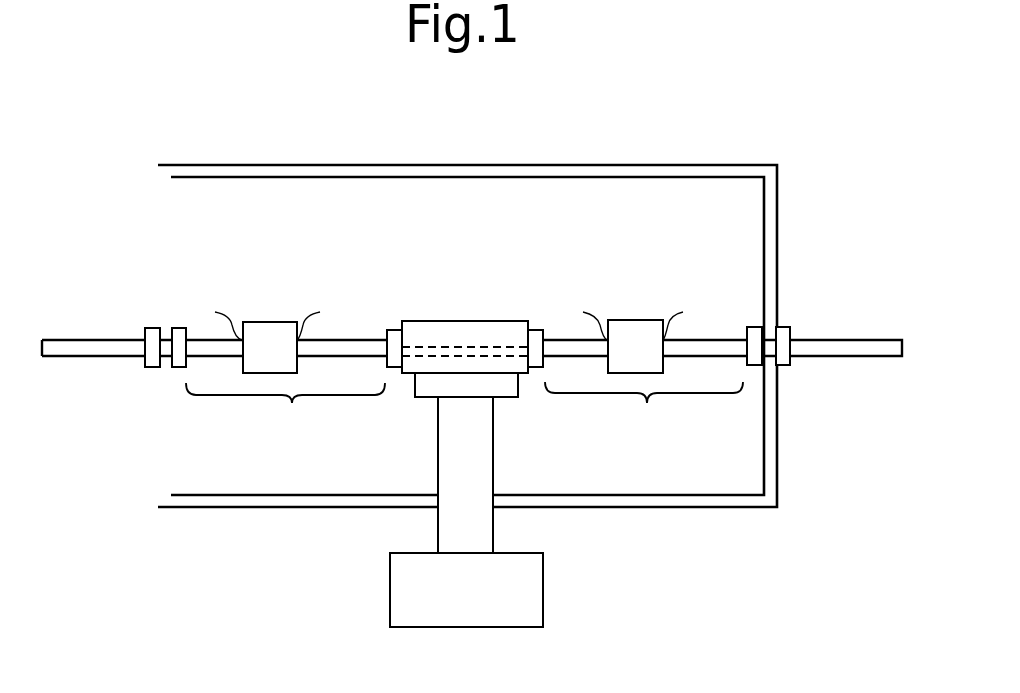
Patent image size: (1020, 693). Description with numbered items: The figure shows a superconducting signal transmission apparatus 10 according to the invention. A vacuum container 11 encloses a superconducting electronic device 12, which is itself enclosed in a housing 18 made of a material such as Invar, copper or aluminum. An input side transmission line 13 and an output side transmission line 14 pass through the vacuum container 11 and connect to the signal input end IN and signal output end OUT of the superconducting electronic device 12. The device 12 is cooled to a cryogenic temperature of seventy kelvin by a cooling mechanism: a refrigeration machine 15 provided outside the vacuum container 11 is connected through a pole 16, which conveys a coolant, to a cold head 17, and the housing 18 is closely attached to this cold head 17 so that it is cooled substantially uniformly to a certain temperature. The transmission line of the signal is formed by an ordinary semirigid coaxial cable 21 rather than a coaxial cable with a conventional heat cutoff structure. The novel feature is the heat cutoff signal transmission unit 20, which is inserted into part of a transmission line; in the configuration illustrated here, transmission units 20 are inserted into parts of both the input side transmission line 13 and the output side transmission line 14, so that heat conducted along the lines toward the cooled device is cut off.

The superconducting signal transmission apparatus 10 is at (479, 112).
The vacuum container 11 is at (722, 164).
The superconducting electronic device 12 is at (452, 347).
The input side transmission line 13 is at (285, 411).
The output side transmission line 14 is at (644, 410).
The refrigeration machine 15 is at (543, 583).
The pole 16 is at (493, 462).
The cold head 17 is at (428, 398).
The housing 18 is at (505, 321).
The heat cutoff signal transmission unit 20 is at (268, 322).
The coaxial cable 21 is at (90, 358).